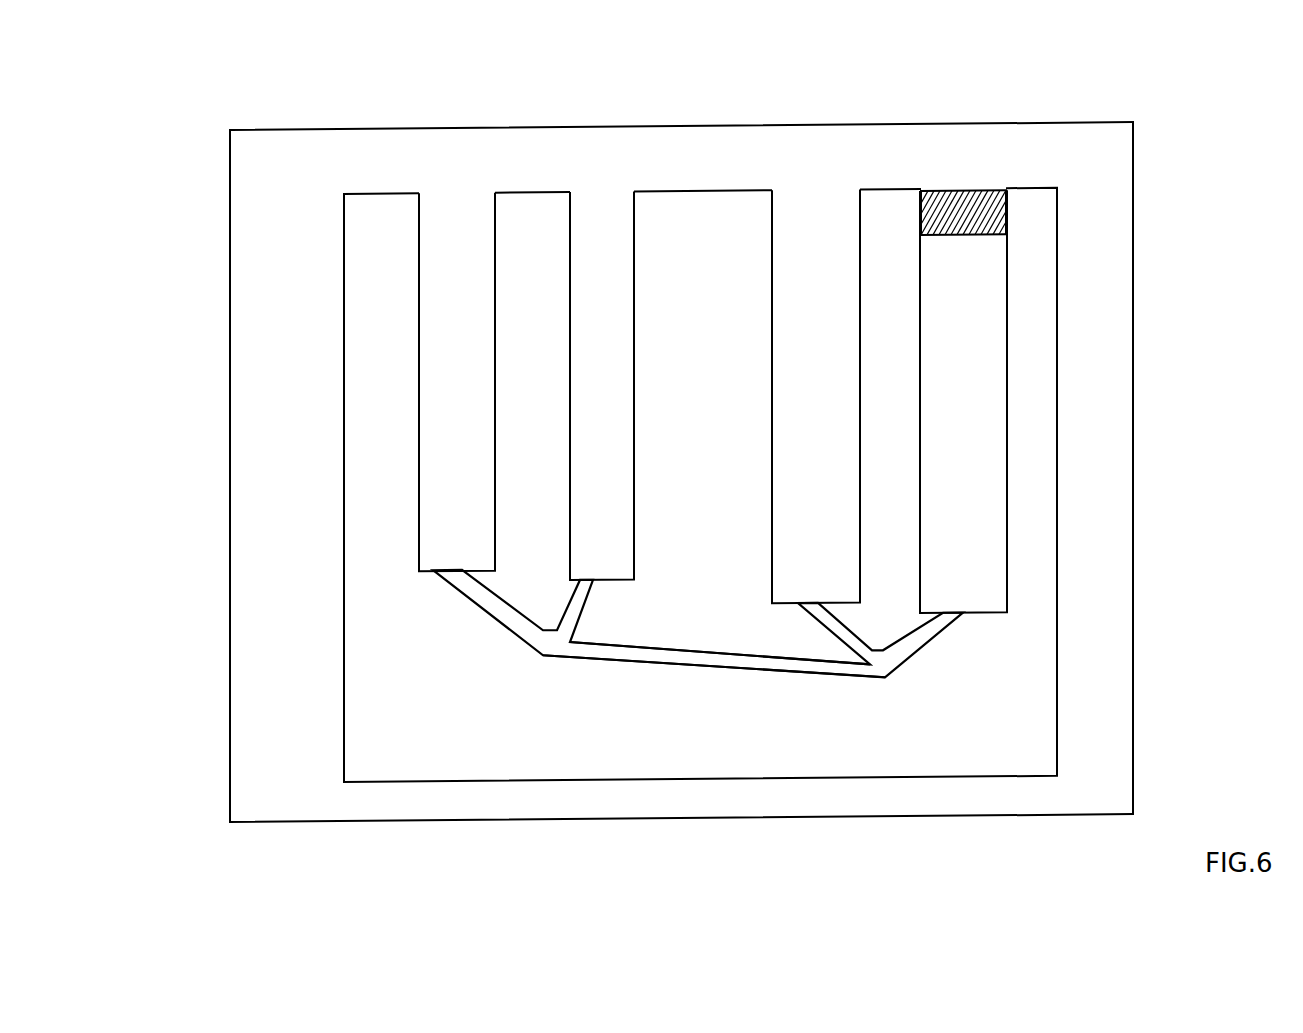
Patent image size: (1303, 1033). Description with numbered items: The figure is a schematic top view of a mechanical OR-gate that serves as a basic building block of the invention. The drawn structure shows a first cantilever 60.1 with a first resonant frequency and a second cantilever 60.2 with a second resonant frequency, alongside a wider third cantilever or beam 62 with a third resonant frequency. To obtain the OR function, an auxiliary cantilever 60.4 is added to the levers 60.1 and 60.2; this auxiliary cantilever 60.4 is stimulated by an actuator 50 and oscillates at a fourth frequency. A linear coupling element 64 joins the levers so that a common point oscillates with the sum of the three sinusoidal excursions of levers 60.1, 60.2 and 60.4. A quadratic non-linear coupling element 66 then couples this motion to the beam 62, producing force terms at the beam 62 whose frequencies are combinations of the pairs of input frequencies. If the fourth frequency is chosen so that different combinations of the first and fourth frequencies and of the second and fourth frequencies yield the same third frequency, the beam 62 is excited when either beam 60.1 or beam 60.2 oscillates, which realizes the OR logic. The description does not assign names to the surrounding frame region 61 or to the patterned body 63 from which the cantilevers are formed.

The actuator 50 is at (972, 188).
The first cantilever 60.1 is at (437, 339).
The second cantilever 60.2 is at (590, 268).
The auxiliary cantilever 60.4 is at (978, 402).
The substrate 61 is at (275, 479).
The third cantilever 62 is at (828, 375).
The conductive ground patch 63 is at (364, 430).
The linear coupling element 64 is at (518, 623).
The non-linear coupling element 66 is at (840, 632).